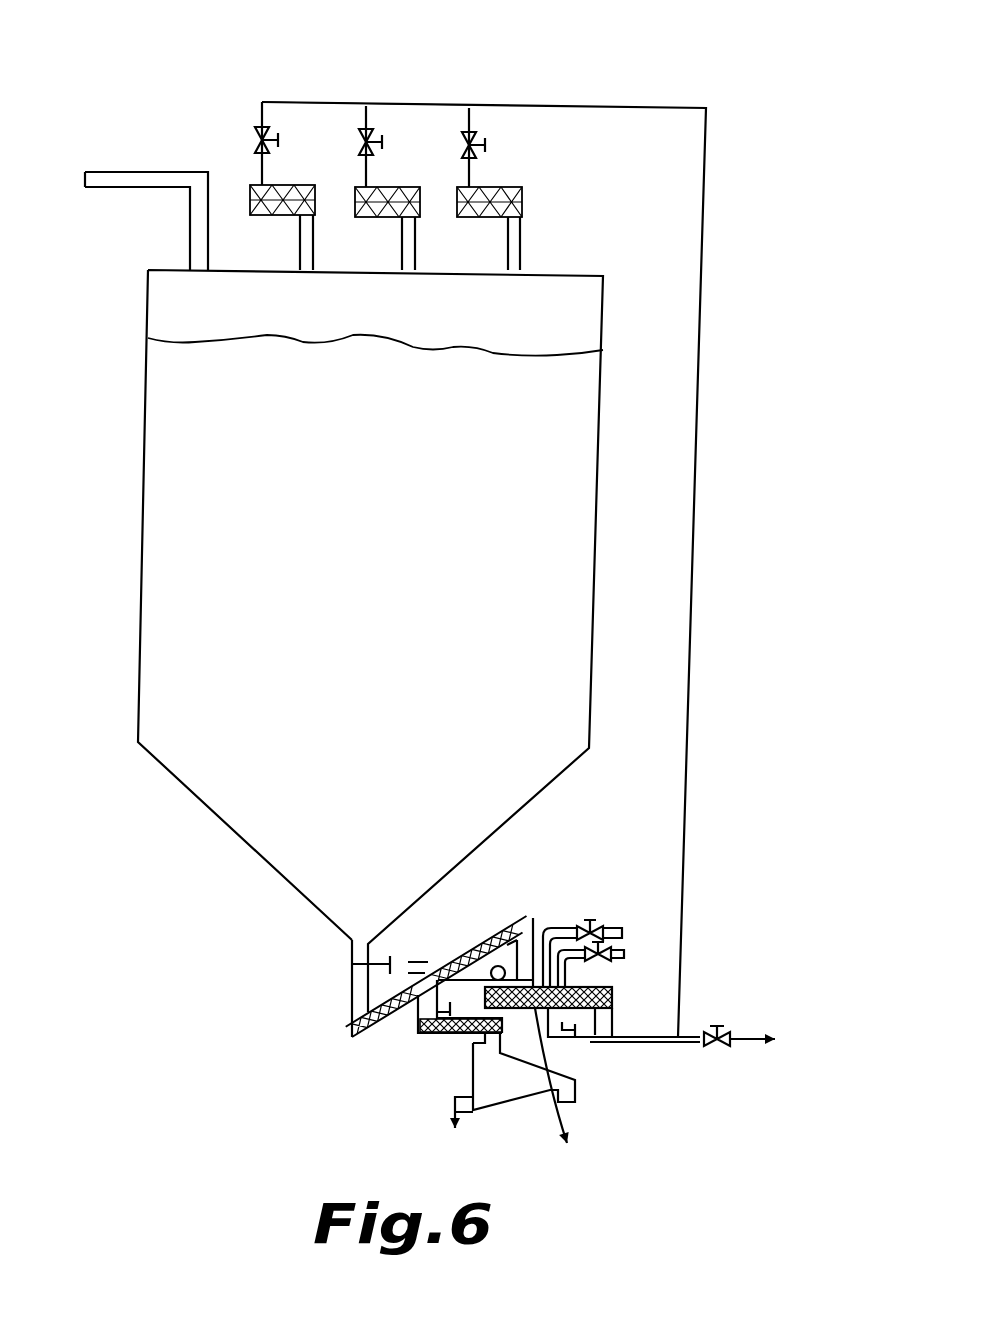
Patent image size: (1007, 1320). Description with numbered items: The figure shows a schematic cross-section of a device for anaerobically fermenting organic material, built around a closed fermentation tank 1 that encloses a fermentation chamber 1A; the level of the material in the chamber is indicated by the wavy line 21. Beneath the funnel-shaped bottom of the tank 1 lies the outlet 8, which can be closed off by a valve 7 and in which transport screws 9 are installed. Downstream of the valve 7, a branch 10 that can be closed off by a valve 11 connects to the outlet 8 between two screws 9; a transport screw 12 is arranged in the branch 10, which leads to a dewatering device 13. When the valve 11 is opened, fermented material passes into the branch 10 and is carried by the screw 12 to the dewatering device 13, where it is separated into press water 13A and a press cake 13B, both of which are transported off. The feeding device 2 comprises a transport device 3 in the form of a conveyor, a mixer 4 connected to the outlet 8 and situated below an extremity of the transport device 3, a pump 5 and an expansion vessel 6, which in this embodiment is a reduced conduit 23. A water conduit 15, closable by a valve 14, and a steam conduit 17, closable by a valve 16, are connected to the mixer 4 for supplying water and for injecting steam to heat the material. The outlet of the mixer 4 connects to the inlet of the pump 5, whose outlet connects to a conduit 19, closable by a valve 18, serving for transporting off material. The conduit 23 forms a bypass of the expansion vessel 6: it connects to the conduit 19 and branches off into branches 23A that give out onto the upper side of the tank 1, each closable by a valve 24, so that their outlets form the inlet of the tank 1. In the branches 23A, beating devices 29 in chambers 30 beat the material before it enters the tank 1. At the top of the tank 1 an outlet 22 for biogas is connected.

The fermentation tank 1 is at (602, 599).
The fermentation chamber 1A is at (552, 385).
The feeding device 2 is at (628, 996).
The transport device 3 is at (508, 947).
The mixer 4 is at (574, 1127).
The pump 5 is at (598, 1038).
The expansion vessel 6 is at (698, 608).
The valve 7 is at (381, 960).
The outlet 8 is at (346, 957).
The transport screws 9 is at (469, 950).
The branch 10 is at (409, 1013).
The valve 11 is at (453, 992).
The transport screw 12 is at (458, 1037).
The dewatering device 13 is at (521, 1085).
The press water 13A is at (453, 1105).
The press cake 13B is at (574, 1110).
The valve 14 is at (598, 923).
The water conduit 15 is at (562, 928).
The valve 16 is at (612, 950).
The steam conduit 17 is at (570, 963).
The valve 18 is at (726, 1045).
The conduit 19 is at (750, 1034).
The liquid level 21 is at (196, 343).
The outlet for biogas 22 is at (138, 172).
The conduit 23 is at (698, 487).
The branches 23A is at (383, 108).
The valve 24 is at (260, 128).
The beating devices 29 is at (278, 216).
The chambers 30 is at (283, 185).